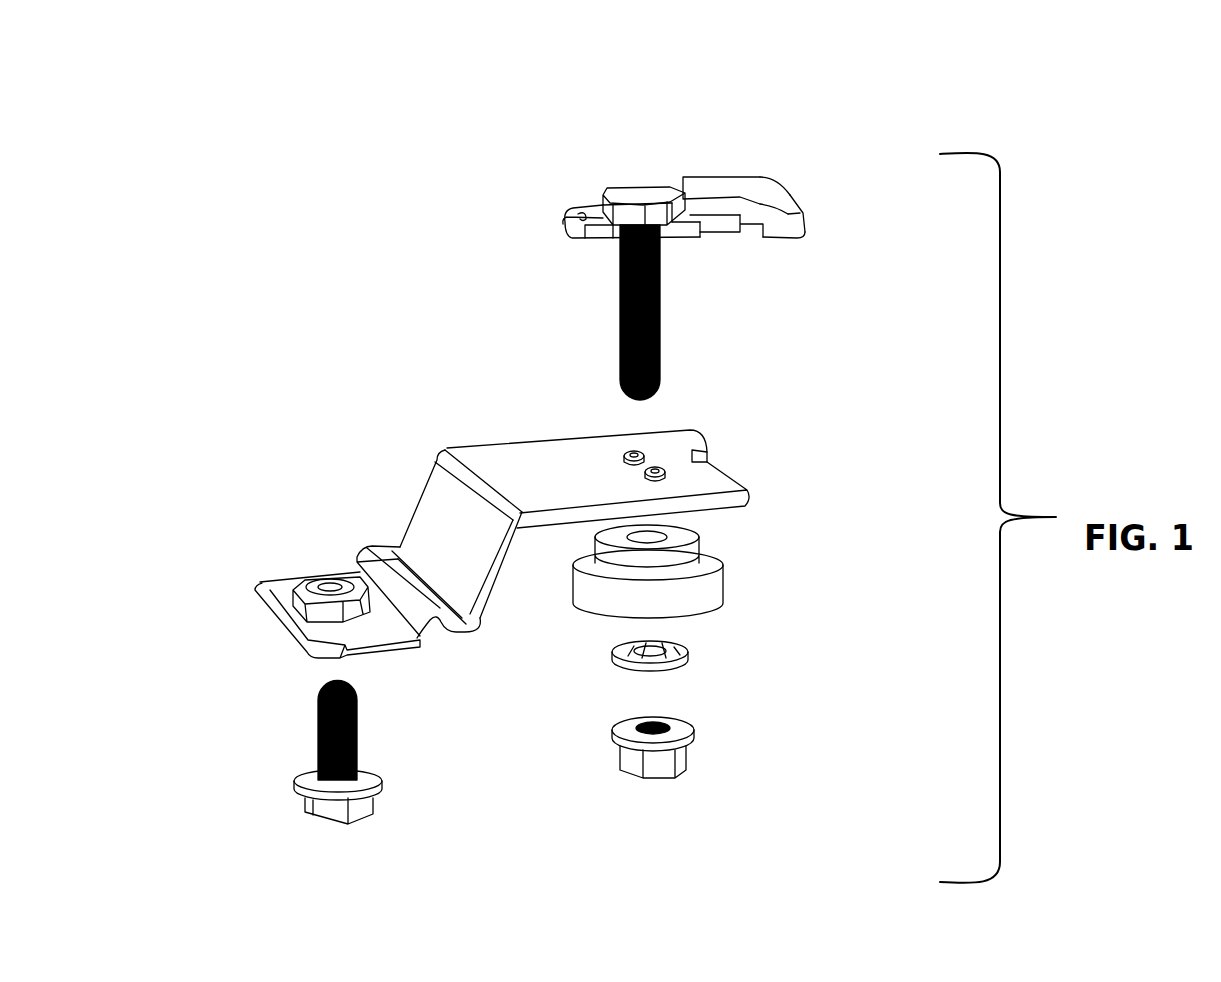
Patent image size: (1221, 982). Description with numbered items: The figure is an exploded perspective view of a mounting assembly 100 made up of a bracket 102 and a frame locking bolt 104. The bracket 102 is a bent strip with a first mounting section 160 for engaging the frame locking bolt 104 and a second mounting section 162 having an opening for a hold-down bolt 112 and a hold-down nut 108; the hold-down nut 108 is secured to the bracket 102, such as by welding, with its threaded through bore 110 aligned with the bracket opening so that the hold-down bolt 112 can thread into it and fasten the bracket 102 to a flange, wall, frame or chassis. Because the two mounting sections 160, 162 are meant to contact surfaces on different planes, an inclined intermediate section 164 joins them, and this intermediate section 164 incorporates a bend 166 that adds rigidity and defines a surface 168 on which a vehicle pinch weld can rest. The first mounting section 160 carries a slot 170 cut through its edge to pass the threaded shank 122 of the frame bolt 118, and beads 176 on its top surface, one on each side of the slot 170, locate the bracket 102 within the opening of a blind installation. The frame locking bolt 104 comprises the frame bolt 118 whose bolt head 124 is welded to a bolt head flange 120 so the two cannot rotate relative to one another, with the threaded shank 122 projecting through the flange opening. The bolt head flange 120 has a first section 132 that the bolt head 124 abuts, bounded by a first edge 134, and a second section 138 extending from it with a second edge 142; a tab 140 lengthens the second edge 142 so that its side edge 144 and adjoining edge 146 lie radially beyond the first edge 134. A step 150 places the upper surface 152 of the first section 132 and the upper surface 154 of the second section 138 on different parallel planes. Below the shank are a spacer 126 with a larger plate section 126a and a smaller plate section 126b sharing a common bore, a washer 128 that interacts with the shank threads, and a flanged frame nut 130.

The mounting assembly 100 is at (262, 272).
The bracket 102 is at (466, 434).
The frame locking bolt 104 is at (639, 108).
The hold-down nut 108 is at (313, 572).
The threaded through bore 110 is at (317, 573).
The hold-down bolt 112 is at (296, 812).
The frame bolt 118 is at (607, 278).
The bolt head flange 120 is at (548, 189).
The threaded shank 122 is at (620, 302).
The bolt head 124 is at (624, 185).
The spacer 126 is at (594, 626).
The larger plate section 126a is at (697, 590).
The smaller plate section 126b is at (683, 553).
The washer 128 is at (618, 665).
The frame nut 130 is at (621, 785).
The first section 132 is at (579, 228).
The first edge 134 is at (708, 205).
The second section 138 is at (734, 198).
The tab 140 is at (763, 198).
The second edge 142 is at (783, 195).
The side edge 144 is at (783, 228).
The adjoining edge 146 is at (733, 225).
The step 150 is at (684, 215).
The upper surface 152 is at (582, 238).
The upper surface 154 is at (703, 190).
The first mounting section 160 is at (526, 453).
The second mounting section 162 is at (275, 593).
The intermediate section 164 is at (440, 517).
The bend 166 is at (390, 563).
The surface 168 is at (373, 562).
The slot 170 is at (700, 462).
The bead 176 is at (633, 451).